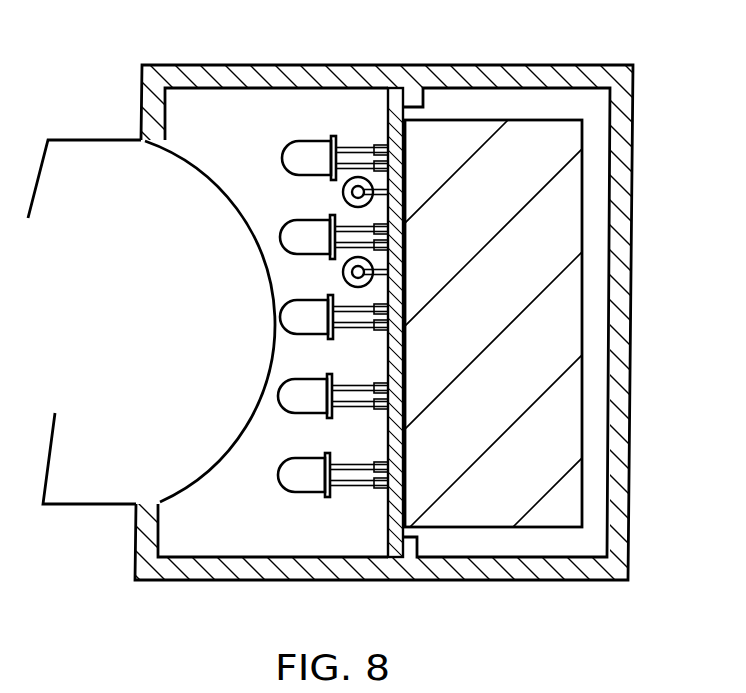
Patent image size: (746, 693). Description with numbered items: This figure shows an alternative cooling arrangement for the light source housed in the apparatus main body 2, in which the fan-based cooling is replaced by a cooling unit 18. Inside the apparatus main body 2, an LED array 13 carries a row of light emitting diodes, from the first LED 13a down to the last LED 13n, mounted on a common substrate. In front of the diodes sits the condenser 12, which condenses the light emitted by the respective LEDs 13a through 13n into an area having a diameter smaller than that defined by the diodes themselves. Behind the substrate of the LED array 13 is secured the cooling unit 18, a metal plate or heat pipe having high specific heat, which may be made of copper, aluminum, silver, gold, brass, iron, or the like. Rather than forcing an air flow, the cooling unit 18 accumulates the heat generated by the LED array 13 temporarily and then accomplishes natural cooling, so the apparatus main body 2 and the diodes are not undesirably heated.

The apparatus main body 2 is at (399, 78).
The condenser 12 is at (92, 505).
The LED array 13 is at (388, 128).
The LED 13a is at (283, 160).
The LED 13n is at (280, 470).
The cooling unit 18 is at (570, 216).